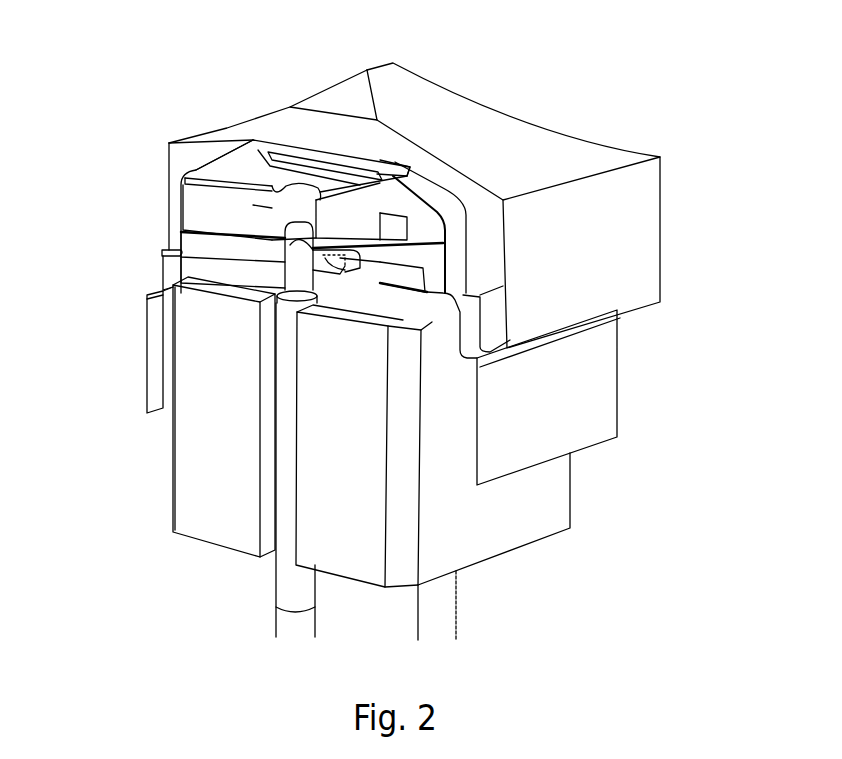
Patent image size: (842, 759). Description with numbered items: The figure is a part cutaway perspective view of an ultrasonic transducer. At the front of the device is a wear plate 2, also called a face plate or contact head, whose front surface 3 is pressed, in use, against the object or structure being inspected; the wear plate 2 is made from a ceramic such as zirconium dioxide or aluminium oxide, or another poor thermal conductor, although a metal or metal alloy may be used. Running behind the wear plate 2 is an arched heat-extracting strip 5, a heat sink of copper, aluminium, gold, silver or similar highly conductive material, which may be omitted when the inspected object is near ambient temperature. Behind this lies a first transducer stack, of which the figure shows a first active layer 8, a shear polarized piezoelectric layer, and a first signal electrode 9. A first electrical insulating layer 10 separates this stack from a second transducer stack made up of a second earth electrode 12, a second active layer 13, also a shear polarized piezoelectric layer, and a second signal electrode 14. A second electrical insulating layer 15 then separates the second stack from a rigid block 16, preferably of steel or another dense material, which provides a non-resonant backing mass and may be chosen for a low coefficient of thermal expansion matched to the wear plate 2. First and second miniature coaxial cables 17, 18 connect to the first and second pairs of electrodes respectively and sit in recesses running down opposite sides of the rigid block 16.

The wear plate 2 is at (645, 232).
The front surface 3 is at (535, 148).
The heat-extracting strip 5 is at (607, 407).
The first active layer 8 is at (263, 168).
The first signal electrode 9 is at (223, 167).
The first electrical insulating layer 10 is at (203, 192).
The second earth electrode 12 is at (297, 222).
The second active layer 13 is at (370, 248).
The second signal electrode 14 is at (348, 257).
The second electrical insulating layer 15 is at (203, 246).
The rigid block 16 is at (205, 266).
The first miniature coaxial cable 17 is at (283, 597).
The second miniature coaxial cable 18 is at (450, 618).